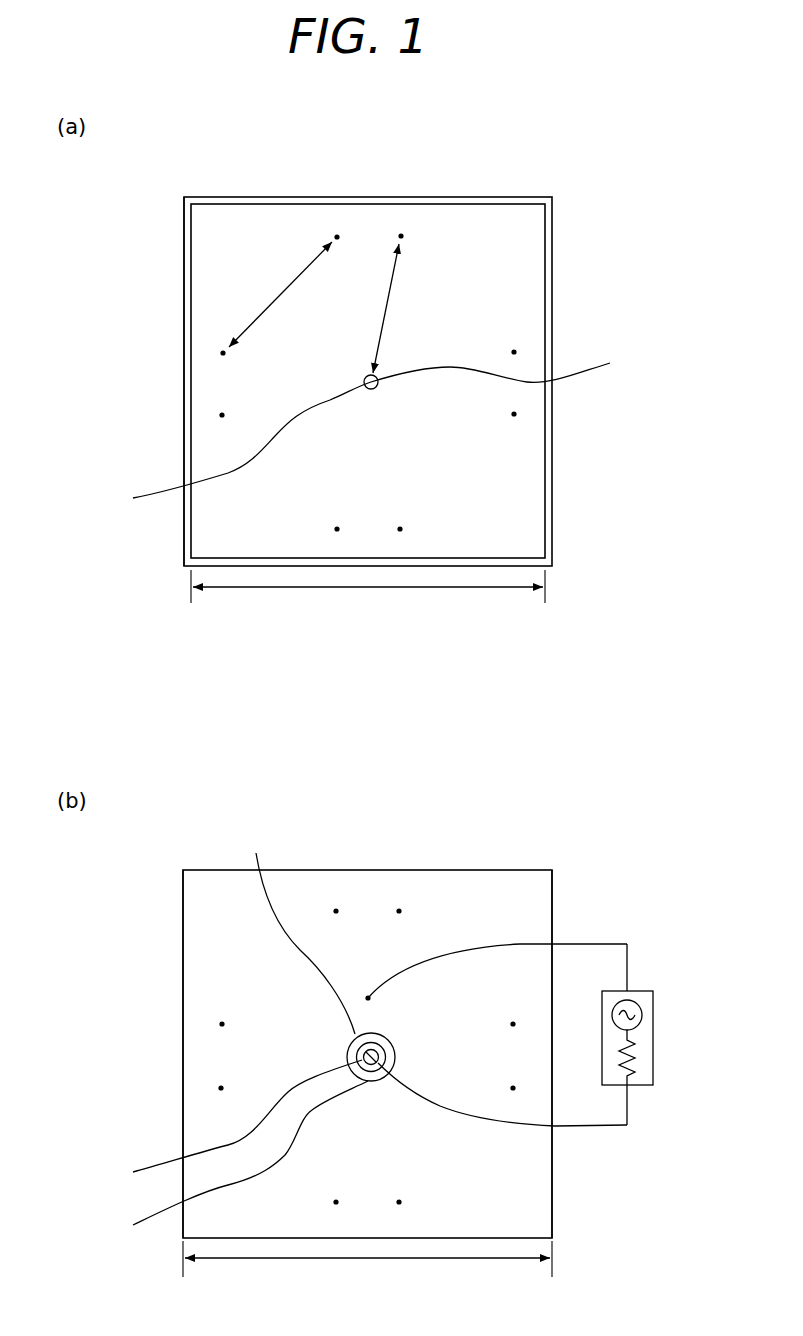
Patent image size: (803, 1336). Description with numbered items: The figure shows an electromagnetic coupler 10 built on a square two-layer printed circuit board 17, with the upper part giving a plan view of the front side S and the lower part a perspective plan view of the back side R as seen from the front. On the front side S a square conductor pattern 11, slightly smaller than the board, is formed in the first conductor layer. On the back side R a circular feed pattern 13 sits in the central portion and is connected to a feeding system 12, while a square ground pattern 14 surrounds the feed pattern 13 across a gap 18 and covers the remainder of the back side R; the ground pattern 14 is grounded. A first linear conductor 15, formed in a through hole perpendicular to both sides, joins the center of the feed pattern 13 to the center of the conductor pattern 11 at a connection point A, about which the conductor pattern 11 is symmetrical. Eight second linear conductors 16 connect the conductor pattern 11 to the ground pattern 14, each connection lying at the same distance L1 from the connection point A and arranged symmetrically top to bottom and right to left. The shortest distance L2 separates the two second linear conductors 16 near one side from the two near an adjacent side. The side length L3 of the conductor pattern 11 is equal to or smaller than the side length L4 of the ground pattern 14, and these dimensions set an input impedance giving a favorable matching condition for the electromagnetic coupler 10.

The electromagnetic coupler 10 is at (570, 194).
The conductor pattern 11 is at (525, 267).
The feeding system 12 is at (640, 988).
The feed pattern 13 is at (310, 946).
The ground pattern 14 is at (538, 915).
The first linear conductor 15 is at (358, 774).
The second linear conductors 16 is at (222, 415).
The two-layer printed circuit board 17 is at (184, 197).
The gap 18 is at (251, 1137).
The connection point A is at (498, 371).
The front side (first conductor layer) S is at (520, 526).
The back side (second conductor layer) R is at (530, 1199).
The distance L1 is at (396, 308).
The shortest distance L2 is at (280, 294).
The length of each side of the conductor pattern L3 is at (368, 594).
The length of each side of the ground pattern L4 is at (367, 1267).